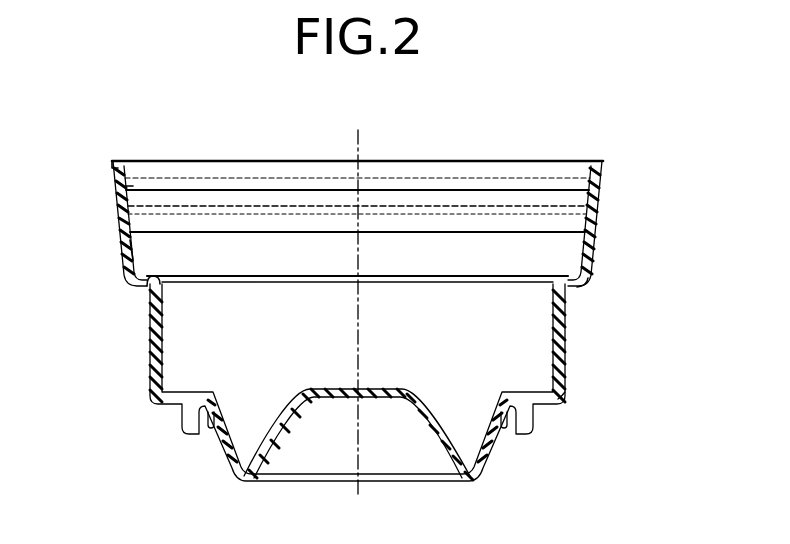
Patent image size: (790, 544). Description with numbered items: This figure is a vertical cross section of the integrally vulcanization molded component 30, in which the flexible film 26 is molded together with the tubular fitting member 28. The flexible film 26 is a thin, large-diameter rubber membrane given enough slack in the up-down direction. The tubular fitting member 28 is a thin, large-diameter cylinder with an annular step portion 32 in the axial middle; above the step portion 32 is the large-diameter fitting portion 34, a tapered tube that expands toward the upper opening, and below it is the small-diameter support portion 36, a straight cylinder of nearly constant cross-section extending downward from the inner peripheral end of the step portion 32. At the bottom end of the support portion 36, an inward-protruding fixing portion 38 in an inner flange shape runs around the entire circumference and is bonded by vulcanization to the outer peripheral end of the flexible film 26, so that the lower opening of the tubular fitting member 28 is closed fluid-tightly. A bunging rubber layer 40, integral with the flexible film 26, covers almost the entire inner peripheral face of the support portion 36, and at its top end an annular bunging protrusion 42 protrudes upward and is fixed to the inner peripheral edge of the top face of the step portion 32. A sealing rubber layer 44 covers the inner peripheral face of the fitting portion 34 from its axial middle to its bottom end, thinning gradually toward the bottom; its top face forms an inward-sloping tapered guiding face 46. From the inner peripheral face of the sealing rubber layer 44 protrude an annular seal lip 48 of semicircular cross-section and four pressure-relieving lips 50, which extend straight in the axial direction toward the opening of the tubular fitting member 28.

The flexible film 26 is at (275, 443).
The tubular fitting member 28 is at (597, 208).
The integrally vulcanization molded component 30 is at (533, 128).
The step portion 32 is at (583, 290).
The fitting portion 34 is at (590, 261).
The support portion 36 is at (571, 355).
The fixing portion 38 is at (549, 407).
The bunging rubber layer 40 is at (160, 366).
The bunging protrusion 42 is at (150, 286).
The sealing rubber layer 44 is at (126, 201).
The guiding face 46 is at (132, 178).
The seal lip 48 is at (135, 208).
The pressure-relieving lip 50 is at (131, 247).